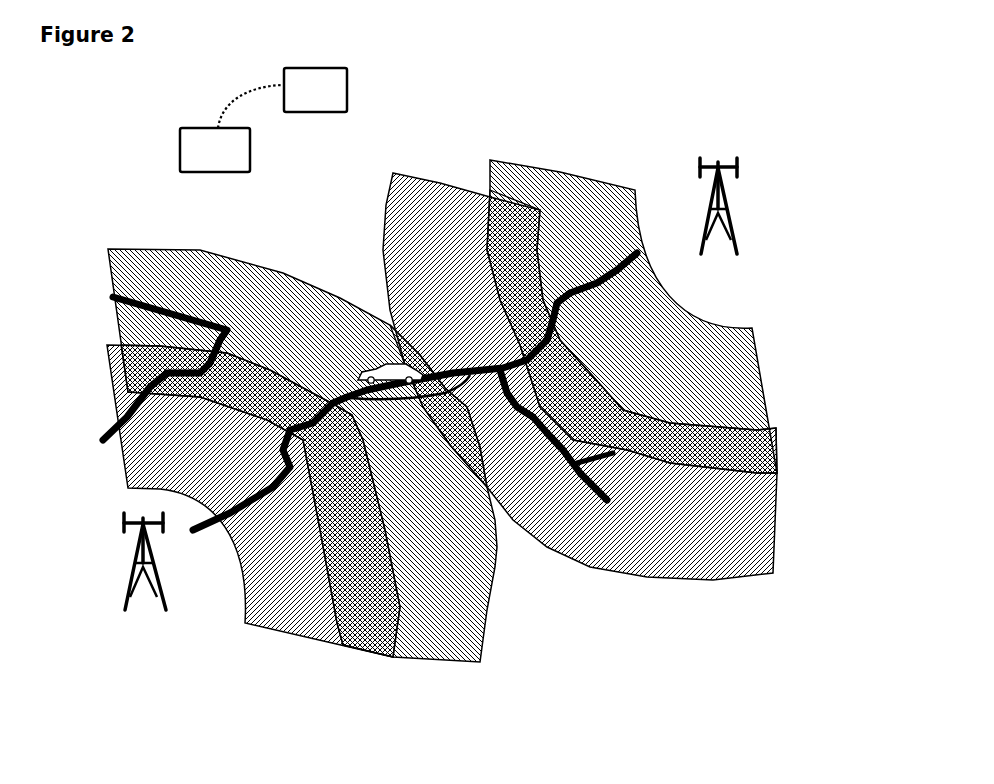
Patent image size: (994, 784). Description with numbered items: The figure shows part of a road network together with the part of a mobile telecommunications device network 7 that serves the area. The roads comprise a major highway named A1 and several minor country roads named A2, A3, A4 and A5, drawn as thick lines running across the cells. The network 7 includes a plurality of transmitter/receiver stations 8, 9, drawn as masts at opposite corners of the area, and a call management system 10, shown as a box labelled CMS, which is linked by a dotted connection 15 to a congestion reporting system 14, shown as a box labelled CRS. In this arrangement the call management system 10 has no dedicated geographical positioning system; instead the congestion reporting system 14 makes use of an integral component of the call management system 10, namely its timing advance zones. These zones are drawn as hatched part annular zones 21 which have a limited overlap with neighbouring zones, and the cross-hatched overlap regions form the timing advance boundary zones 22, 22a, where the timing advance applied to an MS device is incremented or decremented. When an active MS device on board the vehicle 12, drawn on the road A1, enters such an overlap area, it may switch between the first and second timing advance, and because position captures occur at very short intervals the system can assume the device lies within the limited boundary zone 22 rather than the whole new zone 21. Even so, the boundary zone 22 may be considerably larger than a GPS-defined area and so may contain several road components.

The mobile telecommunications device network 7 is at (366, 174).
The transmitter/receiver station 8 is at (739, 237).
The transmitter/receiver station 9 is at (131, 584).
The call management system 10 is at (227, 172).
The vehicle 12 is at (355, 365).
The congestion reporting system 14 is at (350, 85).
The communication link 15 is at (227, 110).
The part annular zone 21 is at (752, 363).
The timing advance boundary zone 22 is at (673, 450).
The cell overlap area 22a is at (353, 515).
The major highway A1 is at (217, 481).
The minor country road A2 is at (186, 398).
The minor country road A3 is at (515, 450).
The minor country road A4 is at (614, 436).
The minor country road A5 is at (411, 430).